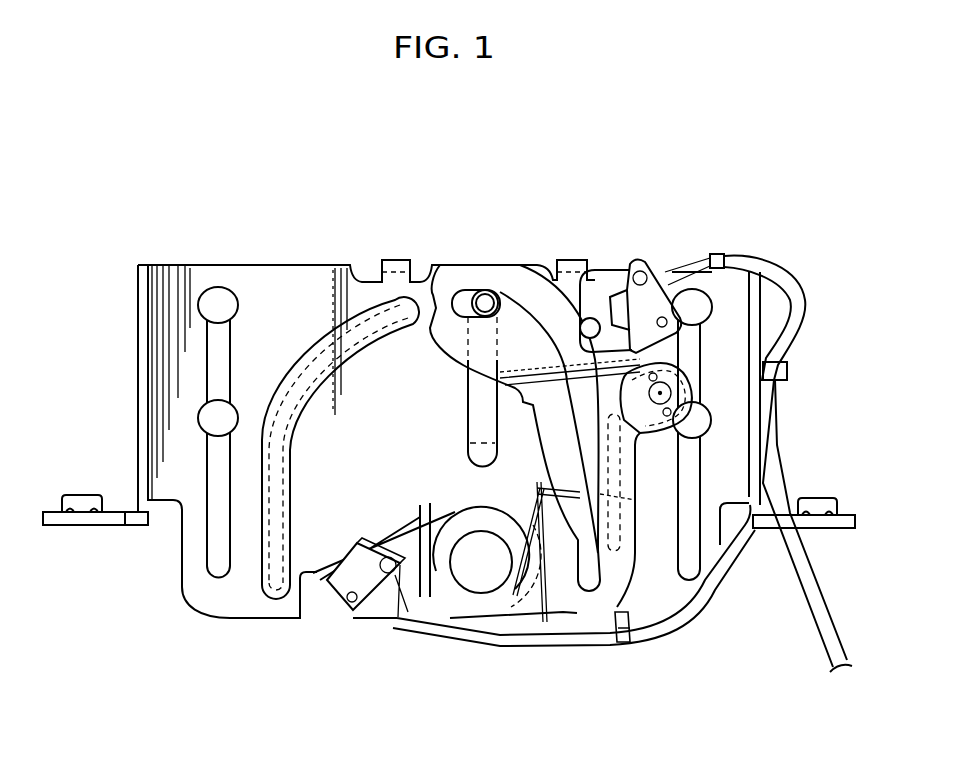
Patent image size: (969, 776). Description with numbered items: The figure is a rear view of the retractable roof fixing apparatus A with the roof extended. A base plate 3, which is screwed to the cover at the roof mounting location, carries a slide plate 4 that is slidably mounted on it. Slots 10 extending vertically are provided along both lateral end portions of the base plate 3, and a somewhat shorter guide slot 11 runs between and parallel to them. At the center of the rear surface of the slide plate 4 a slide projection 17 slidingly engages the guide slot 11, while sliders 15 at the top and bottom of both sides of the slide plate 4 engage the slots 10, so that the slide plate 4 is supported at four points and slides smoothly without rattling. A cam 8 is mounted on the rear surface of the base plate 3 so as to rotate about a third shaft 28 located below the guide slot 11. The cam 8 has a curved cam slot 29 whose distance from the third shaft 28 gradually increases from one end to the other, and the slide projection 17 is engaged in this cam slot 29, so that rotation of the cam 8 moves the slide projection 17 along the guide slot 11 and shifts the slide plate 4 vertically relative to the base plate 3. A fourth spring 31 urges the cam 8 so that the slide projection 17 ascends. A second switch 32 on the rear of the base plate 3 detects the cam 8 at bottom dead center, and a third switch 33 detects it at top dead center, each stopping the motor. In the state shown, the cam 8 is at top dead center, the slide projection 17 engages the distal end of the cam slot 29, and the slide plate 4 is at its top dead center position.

The base plate 3 is at (288, 283).
The slide plate 4 is at (485, 400).
The cam 8 is at (638, 577).
The slots 10 is at (217, 380).
The guide slot 11 is at (433, 597).
The sliders 15 is at (218, 303).
The slide projection 17 is at (485, 303).
The third shaft 28 is at (483, 568).
The cam slot 29 is at (593, 573).
The fourth spring 31 is at (550, 597).
The second switch 32 is at (318, 574).
The third switch 33 is at (628, 300).
The retractable roof fixing apparatus A is at (108, 330).